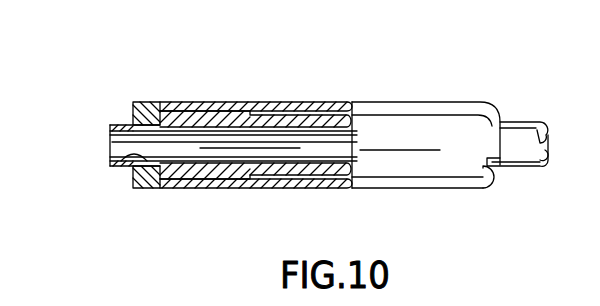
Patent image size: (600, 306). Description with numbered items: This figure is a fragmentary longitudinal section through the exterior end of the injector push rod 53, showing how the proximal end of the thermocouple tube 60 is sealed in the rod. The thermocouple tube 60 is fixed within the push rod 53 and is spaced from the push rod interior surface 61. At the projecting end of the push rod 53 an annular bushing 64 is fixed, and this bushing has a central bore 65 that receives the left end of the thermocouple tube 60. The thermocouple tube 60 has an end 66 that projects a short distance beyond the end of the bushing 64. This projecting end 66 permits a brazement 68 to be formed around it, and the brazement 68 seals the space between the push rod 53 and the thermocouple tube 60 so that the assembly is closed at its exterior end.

The push rod 53 is at (423, 127).
The thermocouple tube 60 is at (518, 135).
The push rod interior surface 61 is at (295, 118).
The annular bushing 64 is at (150, 106).
The central bore 65 is at (113, 166).
The end of thermocouple tube 66 is at (112, 127).
The brazement 68 is at (128, 124).